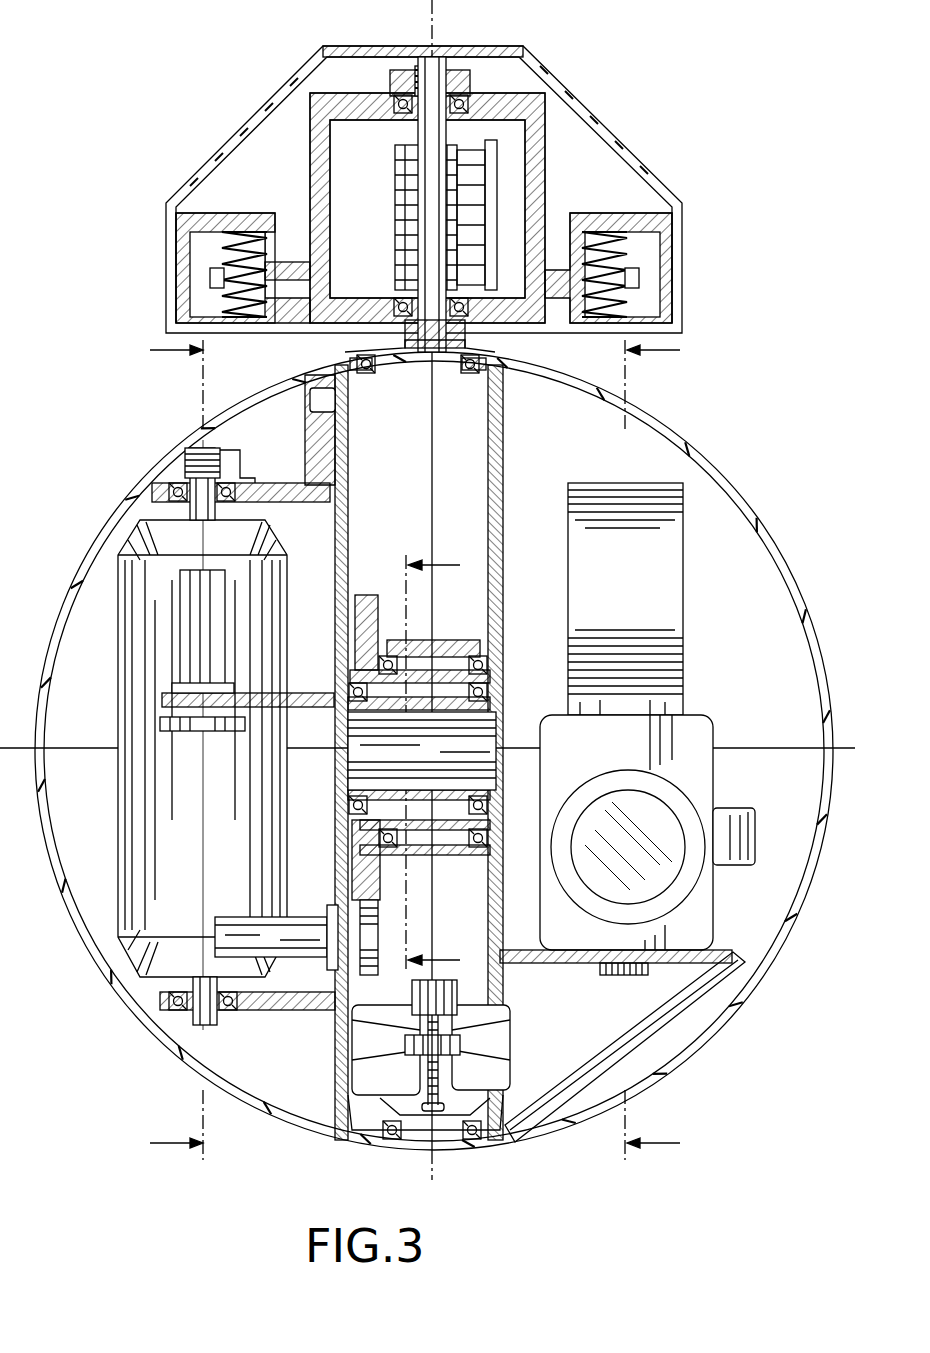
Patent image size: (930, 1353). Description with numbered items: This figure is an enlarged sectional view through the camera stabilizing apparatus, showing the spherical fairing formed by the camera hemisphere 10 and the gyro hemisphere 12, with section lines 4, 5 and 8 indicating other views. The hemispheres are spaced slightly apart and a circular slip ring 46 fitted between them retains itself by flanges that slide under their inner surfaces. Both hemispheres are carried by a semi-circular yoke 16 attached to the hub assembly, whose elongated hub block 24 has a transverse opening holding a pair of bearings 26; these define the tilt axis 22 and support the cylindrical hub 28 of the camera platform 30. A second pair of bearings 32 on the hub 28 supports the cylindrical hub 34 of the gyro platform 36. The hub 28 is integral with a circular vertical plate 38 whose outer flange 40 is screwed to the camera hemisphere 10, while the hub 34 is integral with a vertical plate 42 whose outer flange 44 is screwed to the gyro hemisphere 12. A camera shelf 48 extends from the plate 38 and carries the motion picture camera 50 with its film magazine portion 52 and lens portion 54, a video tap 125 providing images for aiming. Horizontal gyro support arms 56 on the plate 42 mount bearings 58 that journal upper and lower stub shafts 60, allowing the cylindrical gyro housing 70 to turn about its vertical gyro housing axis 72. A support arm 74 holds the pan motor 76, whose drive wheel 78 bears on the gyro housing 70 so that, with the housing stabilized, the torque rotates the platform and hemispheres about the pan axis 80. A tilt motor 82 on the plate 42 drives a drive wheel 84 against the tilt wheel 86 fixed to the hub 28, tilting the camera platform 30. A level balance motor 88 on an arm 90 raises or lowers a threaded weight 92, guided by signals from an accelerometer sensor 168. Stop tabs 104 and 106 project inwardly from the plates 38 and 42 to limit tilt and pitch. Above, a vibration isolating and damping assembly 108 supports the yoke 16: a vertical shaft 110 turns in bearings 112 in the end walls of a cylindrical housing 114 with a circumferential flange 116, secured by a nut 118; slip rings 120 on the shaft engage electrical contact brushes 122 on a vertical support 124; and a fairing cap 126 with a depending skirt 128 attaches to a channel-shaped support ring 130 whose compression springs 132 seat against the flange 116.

The section line 4- 4 is at (669, 748).
The section line 5- 5 is at (437, 755).
The section line 8- 8 is at (160, 748).
The camera hemisphere 10 is at (434, 751).
The gyro hemisphere 12 is at (142, 470).
The semi-circular yoke 16 is at (462, 335).
The tilt axis 22 is at (740, 748).
The hub block 24 is at (452, 645).
The bearings 26 is at (385, 655).
The cylindrical hub 28 is at (405, 660).
The camera platform 30 is at (404, 730).
The bearings 32 is at (348, 700).
The cylindrical hub 34 is at (450, 706).
The gyro platform 36 is at (350, 535).
The vertical plate 38 is at (505, 522).
The outer flange 40 is at (465, 372).
The vertical plate 42 is at (340, 450).
The outer flange 44 is at (362, 372).
The slip ring 46 is at (414, 365).
The camera shelf 48 is at (580, 963).
The motion picture camera 50 is at (660, 813).
The film magazine portion 52 is at (675, 572).
The lens portion 54 is at (660, 895).
The gyro support arms 56 is at (285, 484).
The bearings 58 is at (240, 500).
The stub shafts 60 is at (192, 515).
The gyro housing 70 is at (195, 812).
The gyro housing axis 72 is at (210, 840).
The support arm 74 is at (300, 695).
The pan motor 76 is at (185, 590).
The drive wheel 78 is at (185, 732).
The pan axis 80 is at (448, 18).
The tilt motor 82 is at (225, 918).
The drive wheel 84 is at (378, 920).
The tilt wheel 86 is at (350, 860).
The level balance motor 88 is at (414, 1063).
The arm 90 is at (386, 1050).
The weight 92 is at (460, 1040).
The tab 104 is at (470, 1070).
The tab 106 is at (348, 1100).
The vibration isolating and damping assembly 108 is at (423, 185).
The shaft 110 is at (440, 60).
The bearings 112 is at (398, 112).
The cylindrical housing 114 is at (536, 176).
The circumferential flange 116 is at (276, 262).
The nut 118 is at (468, 76).
The slip rings 120 is at (380, 176).
The electrical contact brushes 122 is at (468, 165).
The vertical support 124 is at (493, 165).
The video tap 125 is at (750, 808).
The fairing cap 126 is at (232, 135).
The skirt 128 is at (176, 222).
The support ring 130 is at (682, 268).
The compression springs 132 is at (215, 295).
The accelerometer sensor 168 is at (310, 406).